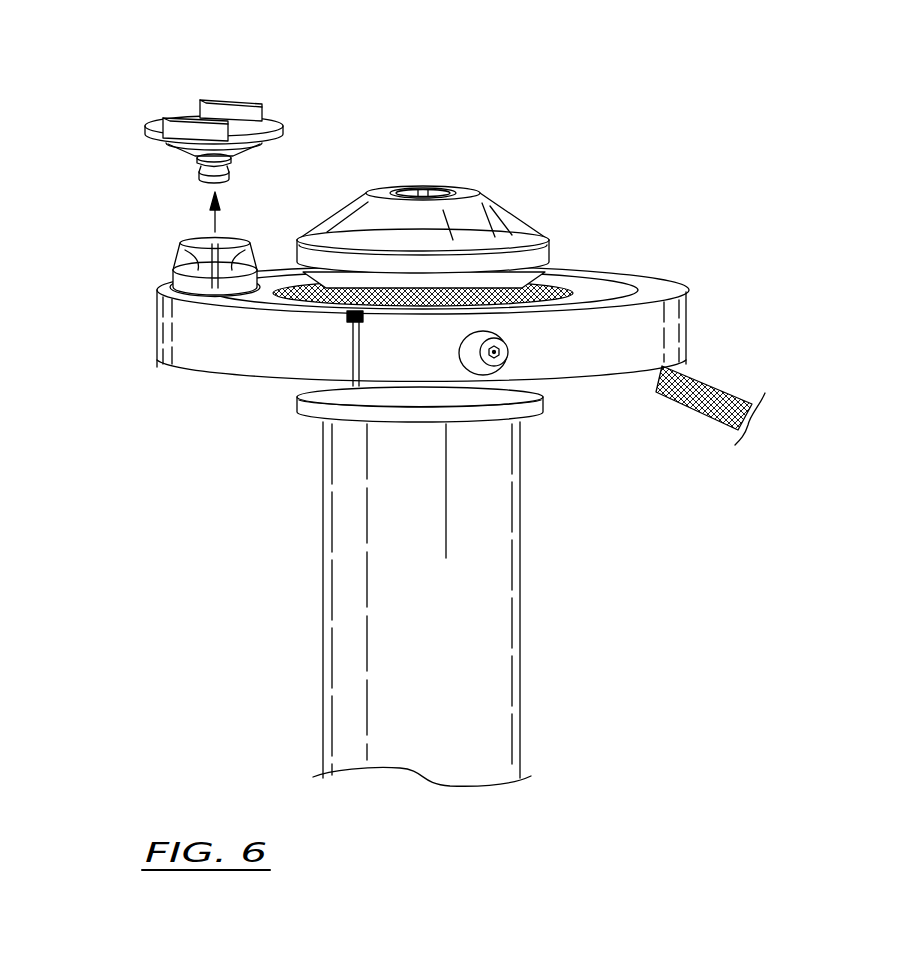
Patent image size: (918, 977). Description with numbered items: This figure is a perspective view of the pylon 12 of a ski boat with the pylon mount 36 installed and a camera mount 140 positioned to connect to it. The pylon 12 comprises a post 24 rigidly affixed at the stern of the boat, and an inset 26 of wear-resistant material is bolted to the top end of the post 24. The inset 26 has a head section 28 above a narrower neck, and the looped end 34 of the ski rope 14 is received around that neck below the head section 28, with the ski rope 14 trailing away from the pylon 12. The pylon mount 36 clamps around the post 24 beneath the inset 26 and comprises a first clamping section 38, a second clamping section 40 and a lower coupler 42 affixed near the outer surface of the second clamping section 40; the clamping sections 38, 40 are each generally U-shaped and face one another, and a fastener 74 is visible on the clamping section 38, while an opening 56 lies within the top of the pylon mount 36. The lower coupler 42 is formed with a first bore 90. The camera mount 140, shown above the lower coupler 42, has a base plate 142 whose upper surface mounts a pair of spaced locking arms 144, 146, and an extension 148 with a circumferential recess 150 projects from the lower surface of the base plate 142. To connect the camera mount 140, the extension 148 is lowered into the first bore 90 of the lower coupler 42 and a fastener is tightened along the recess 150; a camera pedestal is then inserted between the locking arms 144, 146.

The pylon 12 is at (262, 606).
The ski rope 14 is at (718, 382).
The post 24 is at (522, 638).
The inset 26 is at (477, 195).
The head section 28 is at (485, 192).
The looped end 34 is at (525, 278).
The pylon mount 36 is at (462, 311).
The first clamping section 38 is at (623, 345).
The second clamping section 40 is at (197, 350).
The lower coupler 42 is at (165, 278).
The opening 56 is at (650, 287).
The fastener 74 is at (497, 352).
The first bore 90 is at (218, 240).
The camera mount 140 is at (179, 105).
The base plate 142 is at (143, 132).
The locking arm 144 is at (172, 112).
The locking arm 146 is at (233, 103).
The extension 148 is at (207, 182).
The circumferential recess 150 is at (230, 163).